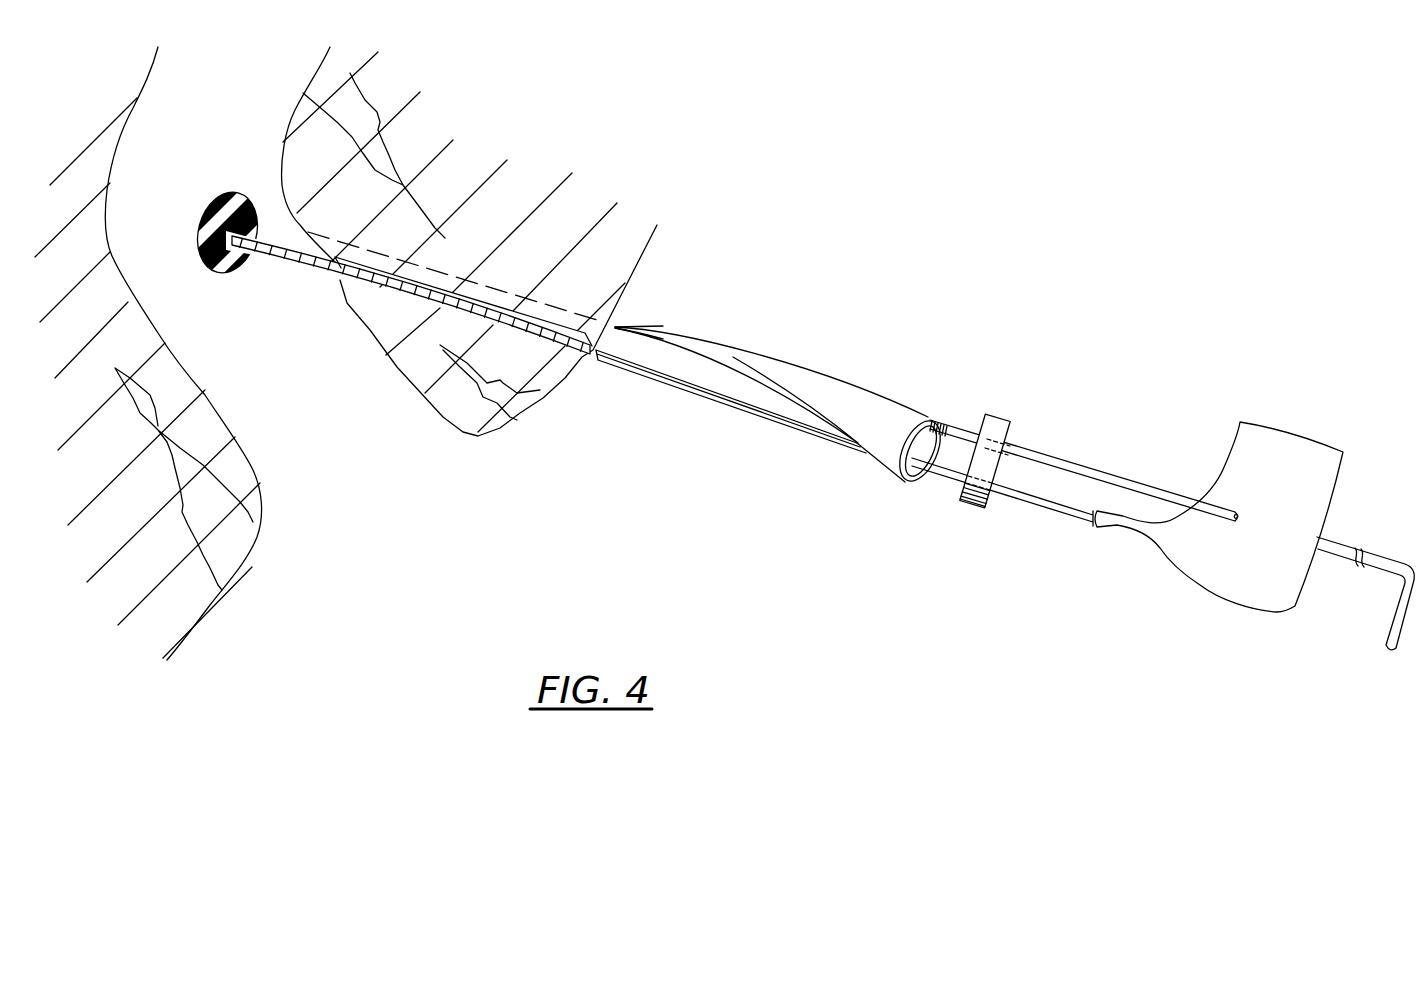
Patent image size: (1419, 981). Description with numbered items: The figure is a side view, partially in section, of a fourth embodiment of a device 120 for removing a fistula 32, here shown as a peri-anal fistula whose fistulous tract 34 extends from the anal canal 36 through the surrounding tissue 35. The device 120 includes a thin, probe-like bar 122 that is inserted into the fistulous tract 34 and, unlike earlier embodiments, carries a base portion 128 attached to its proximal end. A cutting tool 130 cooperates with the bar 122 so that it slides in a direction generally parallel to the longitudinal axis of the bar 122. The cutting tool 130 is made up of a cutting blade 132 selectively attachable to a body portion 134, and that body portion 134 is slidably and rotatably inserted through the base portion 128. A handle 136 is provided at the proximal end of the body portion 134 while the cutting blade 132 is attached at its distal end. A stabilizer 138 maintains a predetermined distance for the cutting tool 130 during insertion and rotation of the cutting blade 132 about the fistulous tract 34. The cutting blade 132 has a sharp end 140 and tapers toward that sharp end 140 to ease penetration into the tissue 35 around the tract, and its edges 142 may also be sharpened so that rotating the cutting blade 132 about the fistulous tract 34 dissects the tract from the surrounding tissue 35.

The fistula 32 is at (348, 319).
The fistulous tract 34 is at (340, 283).
The tissue 35 is at (500, 231).
The anal canal 36 is at (193, 181).
The device 120 is at (820, 388).
The bar 122 is at (668, 380).
The base portion 128 is at (1197, 596).
The cutting tool 130 is at (900, 404).
The cutting blade 132 is at (757, 356).
The body portion 134 is at (1095, 470).
The handle 136 is at (1388, 630).
The stabilizer 138 is at (1006, 419).
The sharp end 140 is at (640, 321).
The edges 142 is at (763, 406).